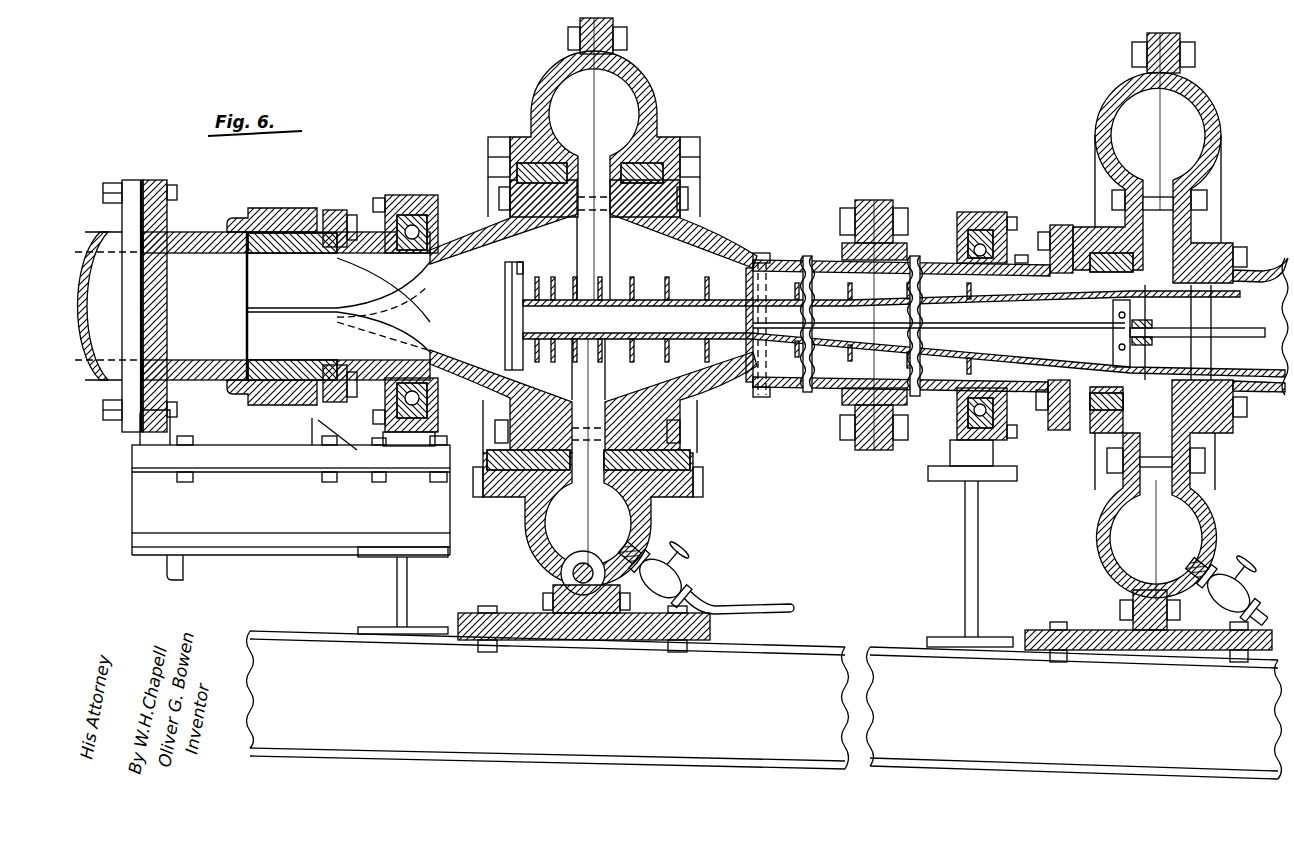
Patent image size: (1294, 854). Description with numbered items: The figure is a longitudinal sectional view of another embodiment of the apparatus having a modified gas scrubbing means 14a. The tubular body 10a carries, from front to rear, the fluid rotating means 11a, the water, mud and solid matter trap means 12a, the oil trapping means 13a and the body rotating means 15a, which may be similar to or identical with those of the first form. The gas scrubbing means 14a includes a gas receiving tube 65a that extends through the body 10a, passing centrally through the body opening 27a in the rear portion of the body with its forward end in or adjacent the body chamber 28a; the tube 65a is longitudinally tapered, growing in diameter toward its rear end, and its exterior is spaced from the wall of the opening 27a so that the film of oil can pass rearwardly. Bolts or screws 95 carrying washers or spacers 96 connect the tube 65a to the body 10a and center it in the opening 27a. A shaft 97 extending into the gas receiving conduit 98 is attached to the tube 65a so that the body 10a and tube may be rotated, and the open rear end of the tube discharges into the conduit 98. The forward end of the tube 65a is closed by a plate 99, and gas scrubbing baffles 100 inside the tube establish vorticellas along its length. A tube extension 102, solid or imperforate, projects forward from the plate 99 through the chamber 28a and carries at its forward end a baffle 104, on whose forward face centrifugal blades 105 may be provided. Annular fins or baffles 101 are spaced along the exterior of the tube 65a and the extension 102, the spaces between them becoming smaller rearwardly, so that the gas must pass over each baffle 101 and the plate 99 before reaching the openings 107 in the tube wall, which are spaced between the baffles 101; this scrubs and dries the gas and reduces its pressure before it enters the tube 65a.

The fluid rotating means 11a is at (273, 291).
The baffle 104 is at (523, 270).
The centrifugal blades 105 is at (507, 289).
The body chamber 28a is at (565, 159).
The gas scrubbing means 14a is at (717, 290).
The body 10a is at (788, 259).
The openings 107 is at (825, 308).
The gas receiving tube 65a is at (947, 262).
The bolts or screws 95 is at (761, 397).
The body rotating means 15a is at (1245, 325).
The shaft 97 is at (1228, 337).
The gas receiving conduit 98 is at (1261, 379).
The gas scrubbing baffles 100 is at (984, 329).
The plate 99 is at (746, 352).
The washers or spacers 96 is at (746, 366).
The body opening 27a is at (835, 373).
The fins or baffles 101 is at (572, 353).
The tube extension 102 is at (648, 340).
The water, mud and solid matter trap means 12a is at (617, 529).
The oil trapping means 13a is at (1116, 543).